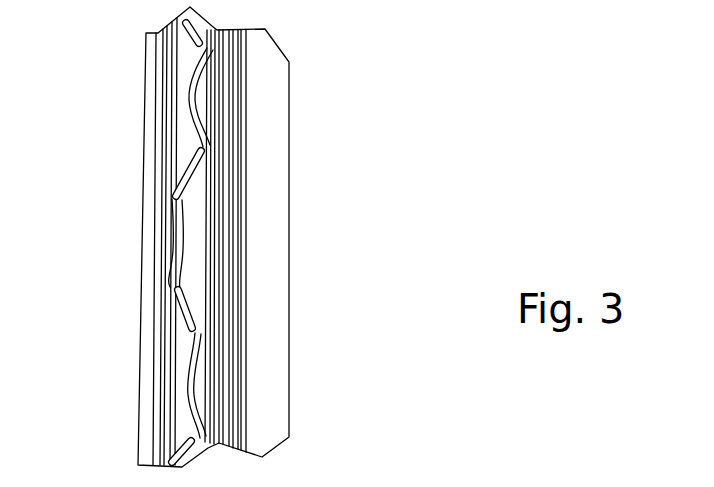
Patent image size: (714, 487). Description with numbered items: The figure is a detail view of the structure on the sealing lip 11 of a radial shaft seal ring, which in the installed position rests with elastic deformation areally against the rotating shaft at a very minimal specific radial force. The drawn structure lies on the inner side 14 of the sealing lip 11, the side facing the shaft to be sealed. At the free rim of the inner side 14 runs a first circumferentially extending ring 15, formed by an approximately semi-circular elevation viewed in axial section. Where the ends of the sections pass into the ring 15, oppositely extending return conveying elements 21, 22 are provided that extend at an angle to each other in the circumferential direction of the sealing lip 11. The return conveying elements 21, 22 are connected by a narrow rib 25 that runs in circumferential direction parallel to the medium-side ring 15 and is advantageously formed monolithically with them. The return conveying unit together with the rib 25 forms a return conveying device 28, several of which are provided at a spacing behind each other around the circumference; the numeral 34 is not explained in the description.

The sealing lip 11 is at (207, 237).
The inner side 14 is at (268, 243).
The first circumferentially extending ring 15 is at (173, 115).
The return conveying element 21 is at (200, 154).
The return conveying element 22 is at (185, 20).
The rib 25 is at (332, 475).
The return conveying device 28 is at (160, 252).
The profile element 34 is at (704, 476).